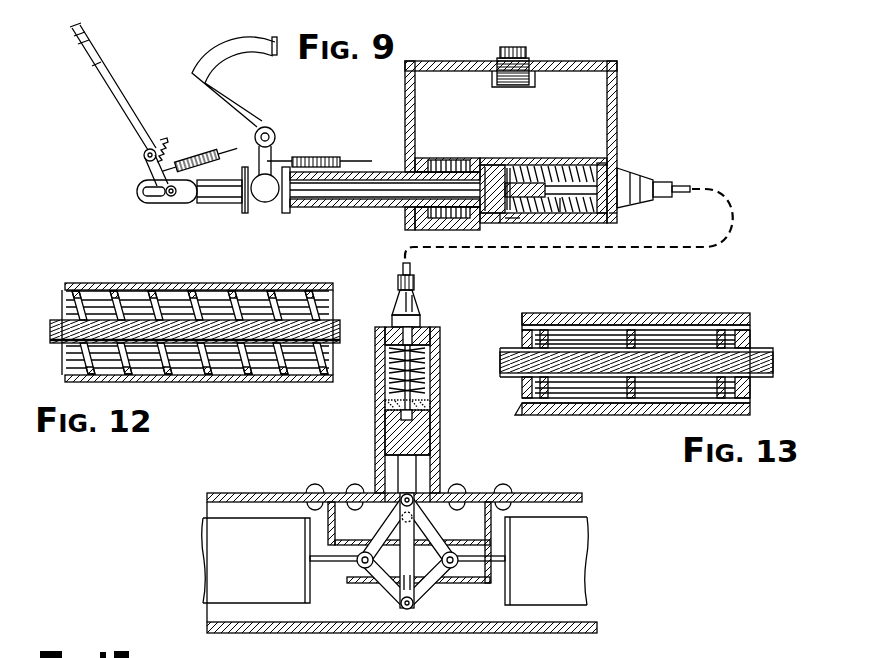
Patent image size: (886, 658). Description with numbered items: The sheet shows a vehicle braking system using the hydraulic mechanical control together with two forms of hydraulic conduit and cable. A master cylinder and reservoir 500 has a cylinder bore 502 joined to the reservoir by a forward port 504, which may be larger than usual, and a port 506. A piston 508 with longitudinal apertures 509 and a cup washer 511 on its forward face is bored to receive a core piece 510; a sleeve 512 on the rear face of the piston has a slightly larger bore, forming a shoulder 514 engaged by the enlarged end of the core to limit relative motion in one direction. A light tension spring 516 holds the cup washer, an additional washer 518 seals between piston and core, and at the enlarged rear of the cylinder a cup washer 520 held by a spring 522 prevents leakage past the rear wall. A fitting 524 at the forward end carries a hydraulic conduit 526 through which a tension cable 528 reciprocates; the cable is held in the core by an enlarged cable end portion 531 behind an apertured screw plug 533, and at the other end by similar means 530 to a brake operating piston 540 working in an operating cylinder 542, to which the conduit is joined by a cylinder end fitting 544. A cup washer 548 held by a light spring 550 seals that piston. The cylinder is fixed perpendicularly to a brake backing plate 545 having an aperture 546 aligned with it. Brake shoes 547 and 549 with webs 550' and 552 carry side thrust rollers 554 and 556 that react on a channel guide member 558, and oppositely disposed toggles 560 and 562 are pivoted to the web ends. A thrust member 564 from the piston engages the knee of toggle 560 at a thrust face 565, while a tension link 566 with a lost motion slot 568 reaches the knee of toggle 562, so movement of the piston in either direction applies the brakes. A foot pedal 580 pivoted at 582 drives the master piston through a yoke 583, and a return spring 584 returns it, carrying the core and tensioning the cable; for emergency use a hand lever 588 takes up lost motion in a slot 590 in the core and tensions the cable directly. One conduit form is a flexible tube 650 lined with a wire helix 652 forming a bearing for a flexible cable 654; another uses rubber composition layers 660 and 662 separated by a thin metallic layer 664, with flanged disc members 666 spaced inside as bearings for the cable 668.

In FIG. 9, the master cylinder and reservoir 500 is at (593, 113).
In FIG. 9, the cylinder bore 502 is at (598, 152).
In FIG. 9, the forward port 504 is at (518, 173).
In FIG. 9, the port 506 is at (445, 158).
In FIG. 9, the piston 508 is at (507, 168).
In FIG. 9, the longitudinal apertures 509 is at (487, 167).
In FIG. 9, the core piece 510 is at (524, 208).
In FIG. 9, the cup washer 511 is at (512, 164).
In FIG. 9, the sleeve 512 is at (388, 172).
In FIG. 9, the shoulder 514 is at (500, 214).
In FIG. 9, the light tension spring 516 is at (618, 219).
In FIG. 9, the additional washer 518 is at (508, 223).
In FIG. 9, the cup washer 520 is at (414, 214).
In FIG. 9, the spring 522 is at (421, 230).
In FIG. 9, the fitting 524 is at (622, 172).
In FIG. 9, the hydraulic conduit 526 is at (670, 181).
In FIG. 9, the tension cable 528 is at (689, 188).
In FIG. 9, the cable securing means 530 is at (424, 405).
In FIG. 9, the enlarged cable end portion 531 is at (563, 172).
In FIG. 9, the apertured screw plug 533 is at (563, 212).
In FIG. 9, the brake operating piston 540 is at (423, 442).
In FIG. 9, the operating cylinder 542 is at (433, 353).
In FIG. 9, the cylinder end fitting 544 is at (428, 327).
In FIG. 9, the brake backing plate 545 is at (584, 502).
In FIG. 9, the aperture 546 is at (441, 483).
In FIG. 9, the brake shoe 547 is at (226, 546).
In FIG. 9, the cup washer 548 is at (386, 419).
In FIG. 9, the brake shoe 549 is at (574, 572).
In FIG. 9, the light spring 550 is at (435, 377).
In FIG. 9, the shoe web 550' is at (315, 563).
In FIG. 9, the shoe web 552 is at (497, 564).
In FIG. 9, the side thrust roller 554 is at (357, 554).
In FIG. 9, the side thrust roller 556 is at (489, 548).
In FIG. 9, the channel guide member 558 is at (343, 573).
In FIG. 9, the toggle 560 is at (426, 538).
In FIG. 9, the toggle 562 is at (430, 590).
In FIG. 9, the thrust member 564 is at (402, 478).
In FIG. 9, the thrust face 565 is at (321, 481).
In FIG. 9, the tension link 566 is at (396, 542).
In FIG. 9, the slot 568 is at (398, 585).
In FIG. 9, the foot pedal 580 is at (245, 108).
In FIG. 9, the pivot 582 is at (271, 128).
In FIG. 9, the yoke 583 is at (270, 200).
In FIG. 9, the return spring 584 is at (327, 155).
In FIG. 9, the hand lever 588 is at (119, 104).
In FIG. 9, the slot 590 is at (146, 184).
In FIG. 12, the flexible tube 650 is at (129, 283).
In FIG. 12, the wire helix 652 is at (87, 283).
In FIG. 12, the flexible cable 654 is at (60, 320).
In FIG. 13, the rubber composition layer 660 is at (703, 313).
In FIG. 13, the rubber composition layer 662 is at (738, 328).
In FIG. 13, the metallic layer 664 is at (745, 320).
In FIG. 13, the flanged disc members 666 is at (624, 399).
In FIG. 13, the cable 668 is at (754, 377).